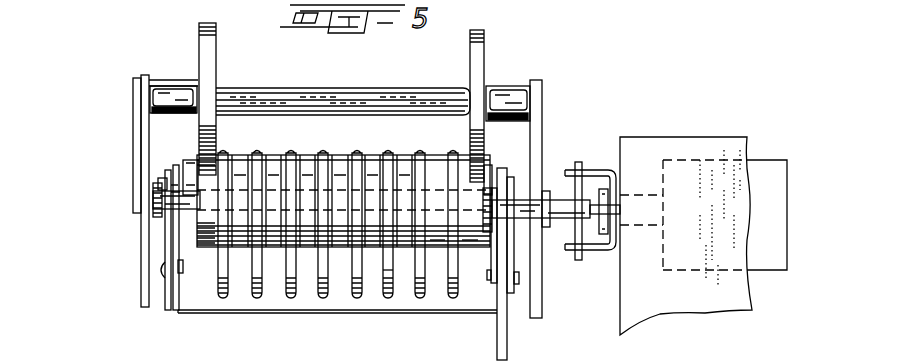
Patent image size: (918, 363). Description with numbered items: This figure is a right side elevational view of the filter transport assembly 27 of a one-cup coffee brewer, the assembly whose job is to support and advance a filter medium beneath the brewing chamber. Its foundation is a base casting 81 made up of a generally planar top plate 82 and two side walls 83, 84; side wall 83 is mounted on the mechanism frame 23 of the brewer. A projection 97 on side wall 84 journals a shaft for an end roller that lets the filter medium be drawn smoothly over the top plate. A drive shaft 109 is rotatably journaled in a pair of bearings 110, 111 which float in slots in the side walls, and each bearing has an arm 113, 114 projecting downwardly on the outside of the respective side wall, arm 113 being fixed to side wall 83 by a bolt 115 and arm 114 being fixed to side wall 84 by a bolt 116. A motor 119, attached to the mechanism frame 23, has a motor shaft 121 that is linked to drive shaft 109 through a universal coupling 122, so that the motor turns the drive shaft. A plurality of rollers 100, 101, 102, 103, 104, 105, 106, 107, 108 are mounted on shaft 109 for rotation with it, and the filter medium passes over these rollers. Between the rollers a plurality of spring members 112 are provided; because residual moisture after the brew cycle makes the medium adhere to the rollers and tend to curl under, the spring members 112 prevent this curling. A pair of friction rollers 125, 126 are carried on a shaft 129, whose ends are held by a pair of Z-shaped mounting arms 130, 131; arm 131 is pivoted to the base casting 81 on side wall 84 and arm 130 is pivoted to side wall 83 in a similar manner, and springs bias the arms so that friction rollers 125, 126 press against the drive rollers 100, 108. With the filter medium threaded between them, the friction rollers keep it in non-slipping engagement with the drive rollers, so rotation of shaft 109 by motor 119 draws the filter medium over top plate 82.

The mechanism frame 23 is at (648, 308).
The filter transport assembly 27 is at (97, 72).
The base casting 81 is at (197, 320).
The top plate 82 is at (190, 167).
The side wall 83 is at (505, 346).
The side wall 84 is at (166, 303).
The projection 97 is at (388, 302).
The roller 100 is at (208, 222).
The roller 101 is at (242, 240).
The roller 102 is at (273, 160).
The roller 103 is at (313, 157).
The roller 104 is at (341, 250).
The roller 105 is at (372, 163).
The roller 106 is at (405, 163).
The roller 107 is at (437, 252).
The roller 108 is at (470, 250).
The drive shaft 109 is at (550, 193).
The bearing 110 is at (494, 208).
The bearing 111 is at (160, 193).
The spring members 112 is at (253, 155).
The arm 113 is at (510, 254).
The arm 114 is at (168, 250).
The bolt 115 is at (518, 280).
The bolt 116 is at (158, 270).
The motor 119 is at (758, 178).
The motor shaft 121 is at (643, 212).
The universal coupling 122 is at (597, 162).
The friction roller 125 is at (478, 63).
The friction roller 126 is at (211, 57).
The shaft 129 is at (298, 95).
The Z-shaped mounting arm 130 is at (534, 115).
The Z-shaped mounting arm 131 is at (145, 128).